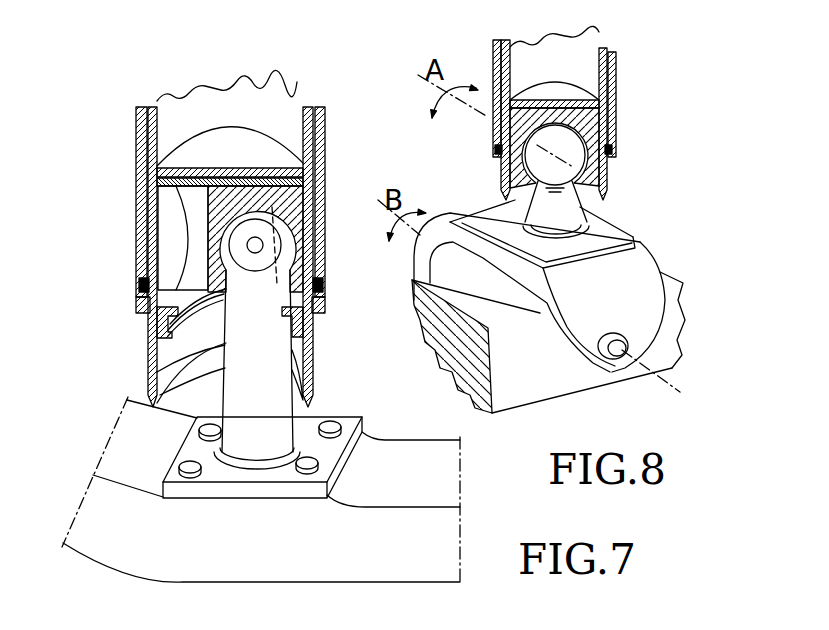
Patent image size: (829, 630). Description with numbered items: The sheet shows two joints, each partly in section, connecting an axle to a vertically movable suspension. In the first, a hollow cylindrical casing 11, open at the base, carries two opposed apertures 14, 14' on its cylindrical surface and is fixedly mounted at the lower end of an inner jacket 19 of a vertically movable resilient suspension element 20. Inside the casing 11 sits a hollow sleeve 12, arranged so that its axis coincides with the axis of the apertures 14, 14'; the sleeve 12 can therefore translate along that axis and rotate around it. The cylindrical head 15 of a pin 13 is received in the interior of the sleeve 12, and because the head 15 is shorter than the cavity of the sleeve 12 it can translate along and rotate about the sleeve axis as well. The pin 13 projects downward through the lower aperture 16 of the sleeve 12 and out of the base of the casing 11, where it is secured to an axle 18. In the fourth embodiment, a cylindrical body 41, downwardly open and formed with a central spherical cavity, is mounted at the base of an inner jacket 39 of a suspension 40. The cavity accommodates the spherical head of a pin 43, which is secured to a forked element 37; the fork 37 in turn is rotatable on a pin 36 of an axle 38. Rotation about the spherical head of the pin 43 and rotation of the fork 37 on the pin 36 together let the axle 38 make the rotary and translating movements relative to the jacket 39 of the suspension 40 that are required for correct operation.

In FIG. 7, the hollow cylindrical casing 11 is at (198, 238).
In FIG. 7, the hollow sleeve 12 is at (282, 199).
In FIG. 7, the pin 13 is at (268, 373).
In FIG. 7, the aperture 14 is at (322, 257).
In FIG. 7, the aperture 14' is at (128, 257).
In FIG. 7, the cylindrical head 15 is at (240, 213).
In FIG. 7, the aperture 16 is at (220, 291).
In FIG. 7, the axle 18 is at (400, 457).
In FIG. 7, the inner jacket 19 is at (153, 335).
In FIG. 7, the vertically movable resilient suspension element 20 is at (133, 155).
In FIG. 8, the pin 36 is at (612, 350).
In FIG. 8, the forked element 37 is at (577, 310).
In FIG. 8, the axle 38 is at (456, 293).
In FIG. 8, the inner jacket 39 is at (505, 175).
In FIG. 8, the suspension 40 is at (498, 60).
In FIG. 8, the cylindrical body 41 is at (583, 125).
In FIG. 8, the pin 43 is at (570, 213).